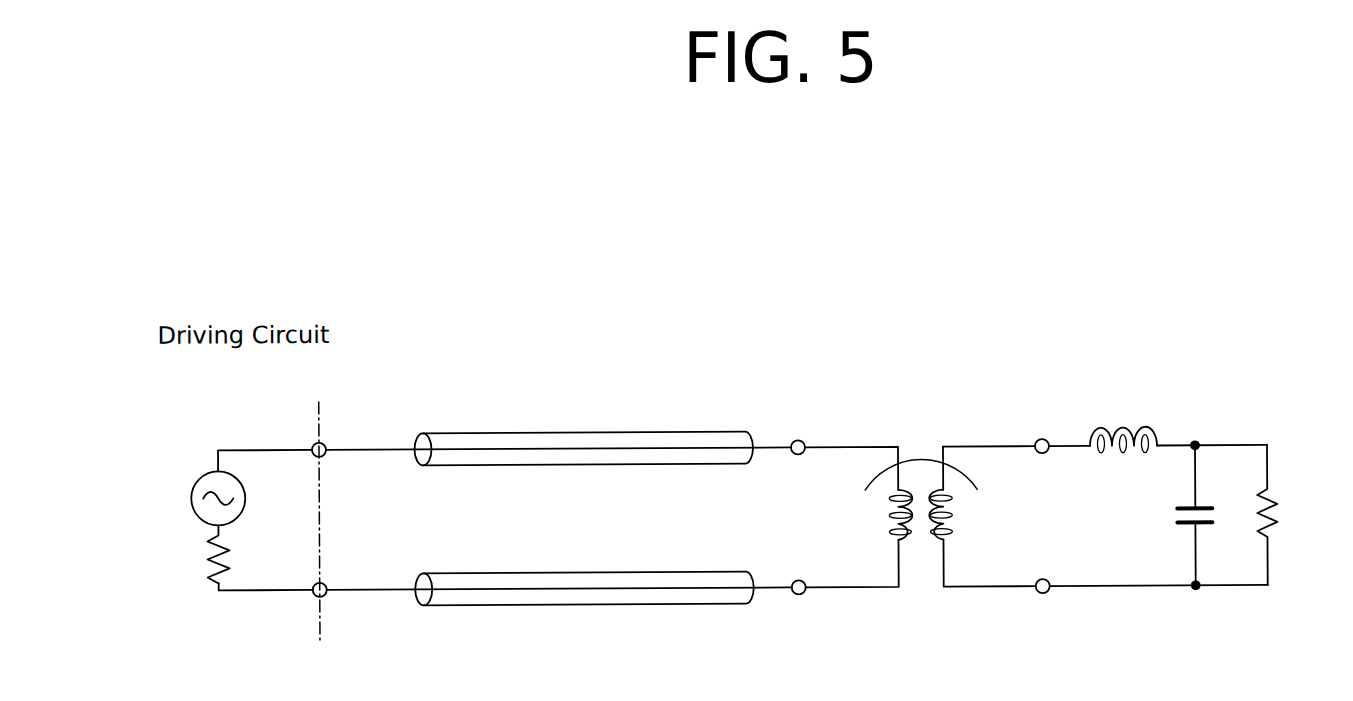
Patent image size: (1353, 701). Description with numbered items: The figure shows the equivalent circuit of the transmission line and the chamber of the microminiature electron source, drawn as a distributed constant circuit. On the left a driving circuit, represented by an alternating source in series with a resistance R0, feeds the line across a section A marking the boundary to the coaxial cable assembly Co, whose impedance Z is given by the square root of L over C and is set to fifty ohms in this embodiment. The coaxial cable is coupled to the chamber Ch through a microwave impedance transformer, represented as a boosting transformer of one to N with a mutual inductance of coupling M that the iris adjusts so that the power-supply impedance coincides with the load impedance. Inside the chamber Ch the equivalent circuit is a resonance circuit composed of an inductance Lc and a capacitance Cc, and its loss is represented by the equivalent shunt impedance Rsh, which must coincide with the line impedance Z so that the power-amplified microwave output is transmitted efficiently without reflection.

The output resistance of driving circuit R0 is at (238, 554).
The section line A-A' between driving circuit and coaxial cable A is at (323, 524).
The coaxial cable assembly Co is at (565, 462).
The mutual inductance of coupling M is at (920, 538).
The chamber equivalent circuit Ch is at (1175, 455).
The inductance of the chamber resonance circuit Lc is at (1123, 421).
The capacitance of the chamber resonance circuit Cc is at (1169, 515).
The equivalent shunt impedance Rsh is at (1299, 515).